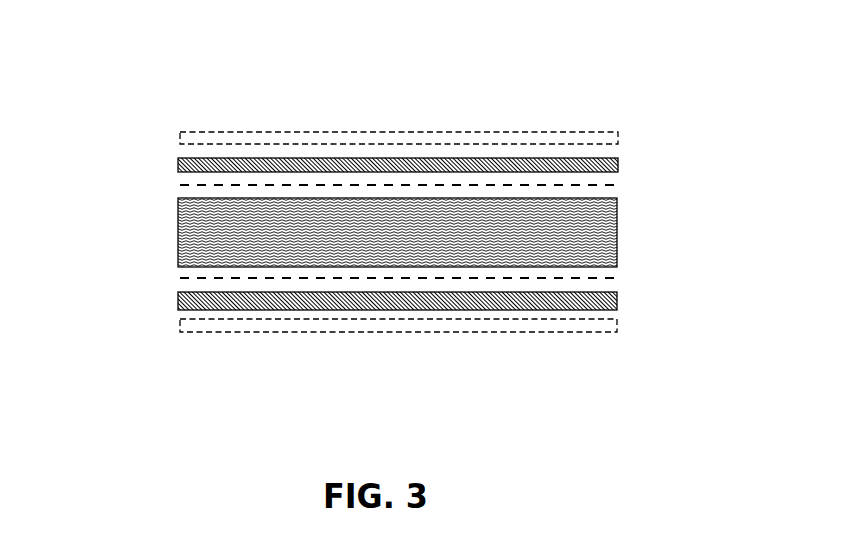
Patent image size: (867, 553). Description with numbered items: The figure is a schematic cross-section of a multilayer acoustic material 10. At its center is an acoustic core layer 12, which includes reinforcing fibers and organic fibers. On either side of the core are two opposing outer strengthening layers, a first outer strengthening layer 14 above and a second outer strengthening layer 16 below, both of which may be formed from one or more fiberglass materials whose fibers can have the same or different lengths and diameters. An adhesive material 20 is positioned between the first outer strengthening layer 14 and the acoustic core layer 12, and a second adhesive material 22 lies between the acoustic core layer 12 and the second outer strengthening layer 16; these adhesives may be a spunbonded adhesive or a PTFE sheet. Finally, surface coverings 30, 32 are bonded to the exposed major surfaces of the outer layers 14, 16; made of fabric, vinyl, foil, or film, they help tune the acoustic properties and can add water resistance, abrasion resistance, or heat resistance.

The multilayer acoustic material 10 is at (130, 105).
The acoustic core layer 12 is at (177, 212).
The first outer strengthening layer 14 is at (619, 159).
The second outer strengthening layer 16 is at (620, 306).
The adhesive material 20 is at (177, 183).
The second adhesive material 22 is at (175, 278).
The surface covering 30 is at (338, 130).
The surface covering 32 is at (337, 333).